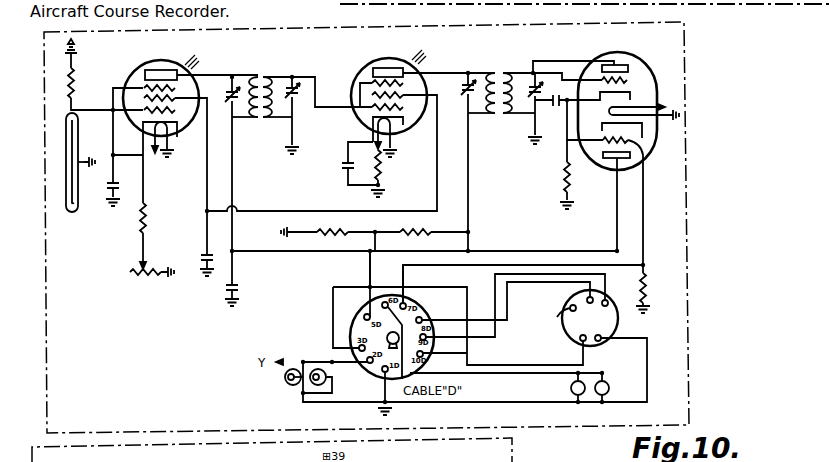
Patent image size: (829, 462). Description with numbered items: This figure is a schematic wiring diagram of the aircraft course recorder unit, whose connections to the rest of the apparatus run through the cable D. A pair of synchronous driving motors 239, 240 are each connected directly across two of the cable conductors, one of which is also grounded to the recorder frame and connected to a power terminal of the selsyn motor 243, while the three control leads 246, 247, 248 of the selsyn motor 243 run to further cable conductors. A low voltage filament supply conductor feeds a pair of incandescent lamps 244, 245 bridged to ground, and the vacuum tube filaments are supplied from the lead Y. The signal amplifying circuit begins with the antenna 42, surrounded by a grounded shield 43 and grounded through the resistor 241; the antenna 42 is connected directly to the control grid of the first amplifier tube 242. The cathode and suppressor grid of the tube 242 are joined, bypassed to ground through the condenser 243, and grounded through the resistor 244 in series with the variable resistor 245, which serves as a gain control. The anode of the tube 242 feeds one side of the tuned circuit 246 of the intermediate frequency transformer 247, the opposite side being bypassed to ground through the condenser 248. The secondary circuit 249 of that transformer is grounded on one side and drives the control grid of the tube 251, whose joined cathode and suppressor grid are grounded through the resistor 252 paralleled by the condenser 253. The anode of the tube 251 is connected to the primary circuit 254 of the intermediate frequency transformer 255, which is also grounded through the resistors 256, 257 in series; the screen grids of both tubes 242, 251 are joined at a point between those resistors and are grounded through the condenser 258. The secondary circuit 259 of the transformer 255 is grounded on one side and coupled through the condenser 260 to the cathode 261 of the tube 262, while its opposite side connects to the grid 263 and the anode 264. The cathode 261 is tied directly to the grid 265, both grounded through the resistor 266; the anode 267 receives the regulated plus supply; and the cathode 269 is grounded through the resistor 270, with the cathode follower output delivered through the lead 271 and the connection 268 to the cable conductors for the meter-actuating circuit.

The antenna 42 is at (70, 172).
The grounded shield 43 is at (67, 195).
The synchronous driving motor 239 is at (571, 388).
The synchronous driving motor 240 is at (609, 388).
The resistor 241 is at (73, 72).
The first amplifier tube 242 is at (158, 62).
The selsyn motor / condenser 243 is at (353, 250).
The resistor / incandescent lamp 244 is at (278, 386).
The variable resistor / incandescent lamp 245 is at (315, 369).
The tuned circuit 246 is at (242, 80).
The intermediate frequency transformer 247 is at (260, 75).
The condenser 248 is at (614, 280).
The secondary circuit 249 is at (281, 108).
The second amplifier tube 251 is at (382, 58).
The resistor 252 is at (384, 165).
The condenser 253 is at (353, 169).
The primary circuit 254 is at (470, 80).
The intermediate frequency transformer 255 is at (501, 71).
The resistor 256 is at (434, 224).
The resistor 257 is at (340, 225).
The condenser 258 is at (197, 243).
The secondary circuit 259 is at (523, 105).
The condenser 260 is at (552, 110).
The cathode 261 is at (598, 98).
The tube 262 is at (657, 88).
The grid 263 is at (630, 80).
The anode 264 is at (622, 63).
The grid 265 is at (650, 206).
The resistor 266 is at (564, 181).
The anode 267 is at (612, 160).
The lead 268 is at (368, 268).
The cathode 269 is at (604, 121).
The resistor 270 is at (658, 293).
The lead 271 is at (395, 277).